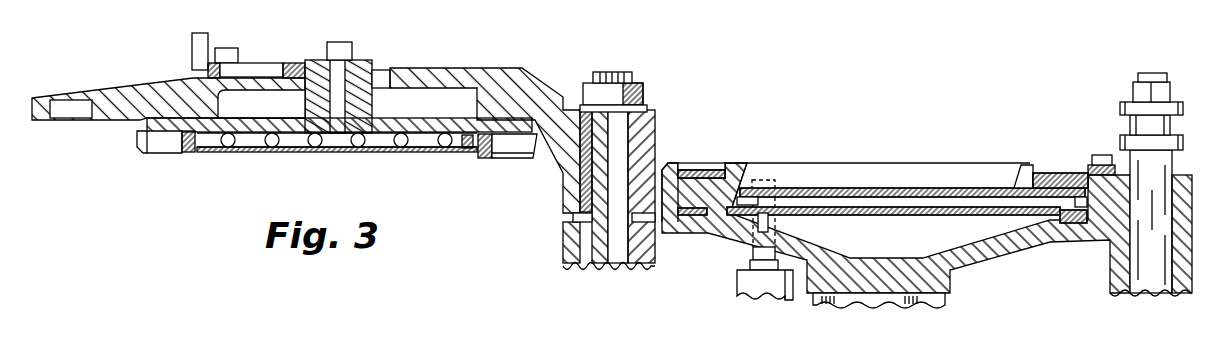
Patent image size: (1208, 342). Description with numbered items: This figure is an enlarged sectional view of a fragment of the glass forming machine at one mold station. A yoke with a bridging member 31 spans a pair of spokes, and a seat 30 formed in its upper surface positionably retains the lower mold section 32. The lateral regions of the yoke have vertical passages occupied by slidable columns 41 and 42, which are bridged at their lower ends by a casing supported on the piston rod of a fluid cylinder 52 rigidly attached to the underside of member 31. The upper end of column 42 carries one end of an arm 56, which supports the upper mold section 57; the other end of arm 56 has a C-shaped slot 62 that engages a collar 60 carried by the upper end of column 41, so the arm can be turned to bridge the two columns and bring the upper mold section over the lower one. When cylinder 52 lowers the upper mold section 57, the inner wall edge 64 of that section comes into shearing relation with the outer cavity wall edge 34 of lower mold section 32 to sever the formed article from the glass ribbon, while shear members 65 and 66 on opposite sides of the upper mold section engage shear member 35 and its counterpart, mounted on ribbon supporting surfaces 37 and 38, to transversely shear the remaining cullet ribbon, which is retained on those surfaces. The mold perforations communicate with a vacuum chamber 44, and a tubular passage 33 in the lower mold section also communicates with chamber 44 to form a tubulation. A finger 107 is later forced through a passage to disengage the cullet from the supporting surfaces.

The seat 30 is at (678, 188).
The bridging member 31 is at (1000, 250).
The lower mold section 32 is at (727, 162).
The tubular passage 33 is at (772, 180).
The cavity wall outer edge 34 is at (1037, 167).
The shear member 35 is at (714, 168).
The ribbon supporting surface 37 is at (700, 162).
The ribbon supporting surface 38 is at (1057, 172).
The column 41 is at (1142, 293).
The column 42 is at (595, 265).
The vacuum chamber 44 is at (875, 198).
The fluid cylinder 52 is at (947, 302).
The arm 56 is at (472, 68).
The upper mold section 57 is at (387, 133).
The collar 60 is at (1120, 106).
The C-shaped slot 62 is at (62, 121).
The inner wall edge 64 is at (192, 154).
The shear member 65 is at (167, 154).
The shear member 66 is at (498, 160).
The finger 107 is at (769, 277).